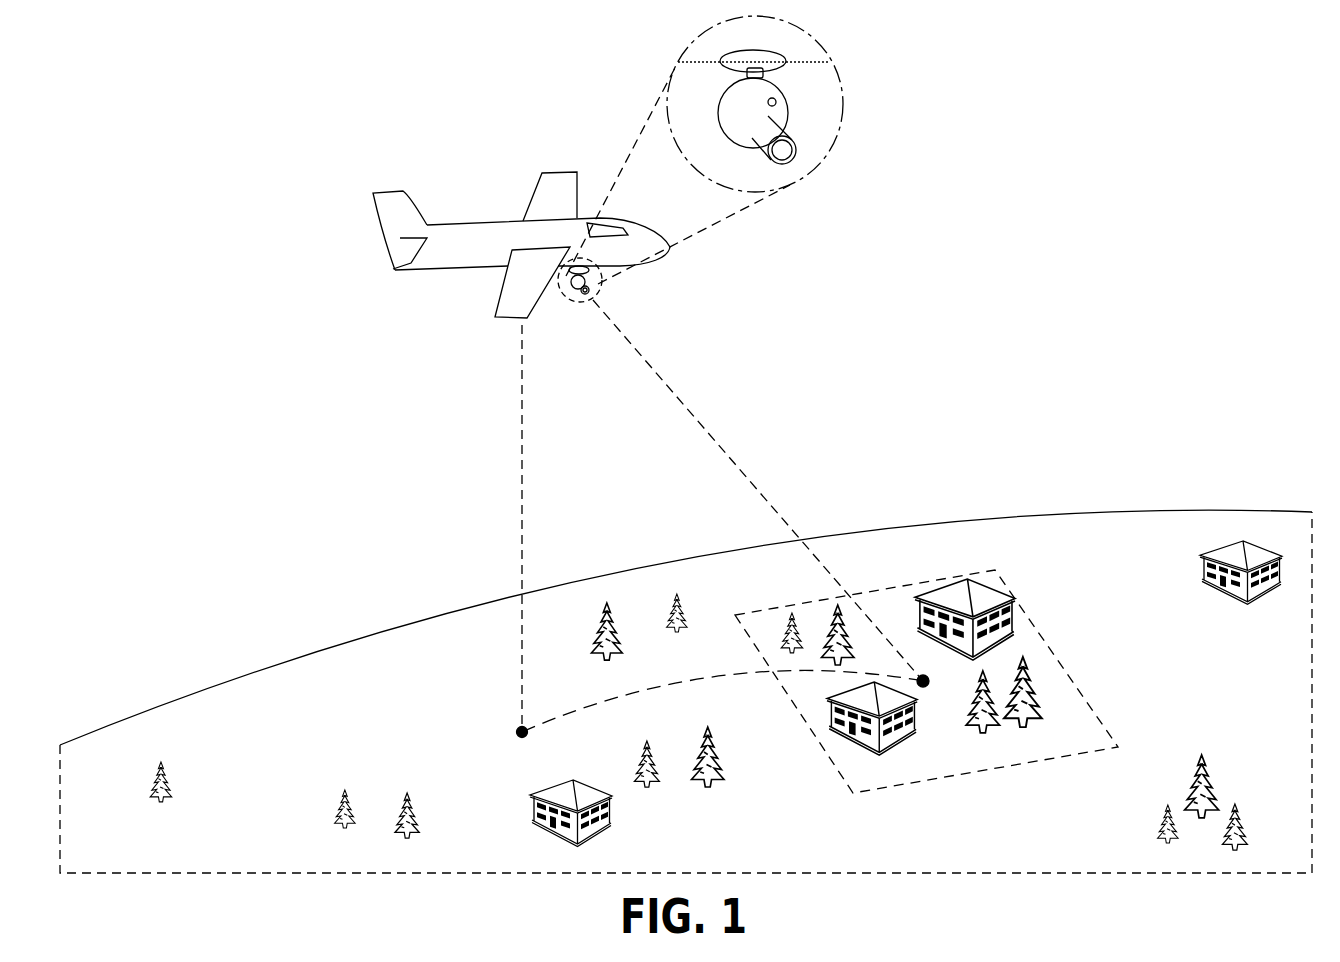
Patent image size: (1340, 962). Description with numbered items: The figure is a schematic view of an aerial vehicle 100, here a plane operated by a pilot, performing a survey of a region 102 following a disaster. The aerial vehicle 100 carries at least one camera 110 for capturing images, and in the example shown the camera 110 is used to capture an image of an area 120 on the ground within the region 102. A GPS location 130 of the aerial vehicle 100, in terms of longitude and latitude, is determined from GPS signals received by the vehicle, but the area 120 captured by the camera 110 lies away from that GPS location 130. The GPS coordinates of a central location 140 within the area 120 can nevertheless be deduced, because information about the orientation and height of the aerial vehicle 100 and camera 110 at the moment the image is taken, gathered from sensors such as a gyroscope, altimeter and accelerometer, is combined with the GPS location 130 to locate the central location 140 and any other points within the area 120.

The aerial vehicle 100 is at (485, 200).
The camera 110 is at (807, 125).
The region 102 is at (415, 643).
The area 120 is at (1057, 657).
The GPS location 130 is at (513, 736).
The central location 140 is at (923, 689).